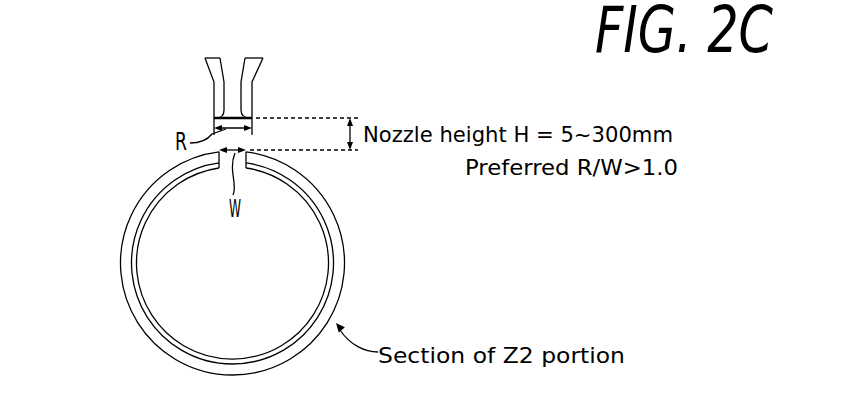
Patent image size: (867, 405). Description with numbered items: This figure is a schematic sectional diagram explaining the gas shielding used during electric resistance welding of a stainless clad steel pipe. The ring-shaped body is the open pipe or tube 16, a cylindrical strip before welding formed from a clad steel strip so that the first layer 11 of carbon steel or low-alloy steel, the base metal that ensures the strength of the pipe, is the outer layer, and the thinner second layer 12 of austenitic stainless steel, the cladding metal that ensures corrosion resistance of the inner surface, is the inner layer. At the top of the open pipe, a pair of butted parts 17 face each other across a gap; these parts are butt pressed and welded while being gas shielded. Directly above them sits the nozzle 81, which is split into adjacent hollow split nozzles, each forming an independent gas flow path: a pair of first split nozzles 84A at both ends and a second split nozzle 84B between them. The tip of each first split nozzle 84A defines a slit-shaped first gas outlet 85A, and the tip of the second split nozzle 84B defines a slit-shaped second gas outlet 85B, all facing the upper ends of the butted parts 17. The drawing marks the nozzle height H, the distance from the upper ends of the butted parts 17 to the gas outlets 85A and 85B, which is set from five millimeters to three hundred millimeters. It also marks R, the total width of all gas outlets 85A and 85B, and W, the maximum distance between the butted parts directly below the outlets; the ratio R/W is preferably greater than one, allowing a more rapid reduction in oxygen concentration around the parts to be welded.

The nozzle 81 is at (244, 79).
The first split nozzle 84A is at (215, 95).
The second split nozzle 84B is at (232, 78).
The first gas outlet 85A is at (214, 115).
The second gas outlet 85B is at (222, 109).
The first layer 11 is at (263, 263).
The second layer 12 is at (136, 265).
The open pipe or tube 16 is at (345, 252).
The butted parts 17 is at (220, 163).